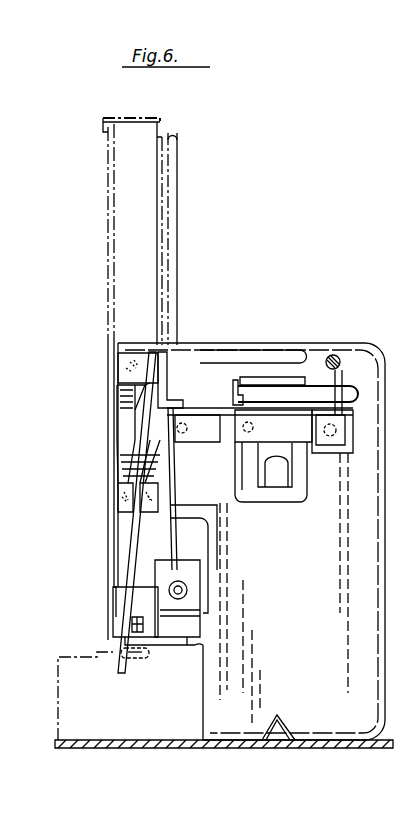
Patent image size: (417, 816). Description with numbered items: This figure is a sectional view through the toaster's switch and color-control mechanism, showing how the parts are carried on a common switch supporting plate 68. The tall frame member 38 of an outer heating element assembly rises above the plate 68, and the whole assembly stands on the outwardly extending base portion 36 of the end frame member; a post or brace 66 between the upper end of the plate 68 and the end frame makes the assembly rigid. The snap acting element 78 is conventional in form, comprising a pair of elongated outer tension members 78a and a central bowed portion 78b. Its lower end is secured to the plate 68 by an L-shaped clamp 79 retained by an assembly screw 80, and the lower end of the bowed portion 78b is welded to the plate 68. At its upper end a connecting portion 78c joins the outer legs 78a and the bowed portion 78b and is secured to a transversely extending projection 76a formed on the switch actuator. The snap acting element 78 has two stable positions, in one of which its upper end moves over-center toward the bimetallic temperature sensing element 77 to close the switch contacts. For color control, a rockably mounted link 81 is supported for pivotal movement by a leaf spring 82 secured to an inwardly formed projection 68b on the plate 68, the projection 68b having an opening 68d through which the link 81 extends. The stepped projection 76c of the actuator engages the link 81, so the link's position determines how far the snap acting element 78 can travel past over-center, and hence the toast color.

The frame member 38 is at (139, 116).
The switch supporting plate 68 is at (224, 353).
The post or brace 66 is at (337, 358).
The stepped projection 76c is at (206, 416).
The rockably mounted link 81 is at (345, 428).
The leaf spring 82 is at (296, 430).
The opening 68d is at (289, 482).
The inwardly formed projection 68b is at (273, 482).
The connecting portion 78c is at (118, 375).
The transversely extending projection 76a is at (130, 363).
The central bowed portion 78b is at (132, 428).
The outer tension members 78a is at (110, 468).
The bimetallic temperature sensing element 77 is at (132, 543).
The snap acting element 78 is at (107, 590).
The L-shaped clamp 79 is at (143, 603).
The assembly screw 80 is at (140, 655).
The base portion 36 is at (155, 742).